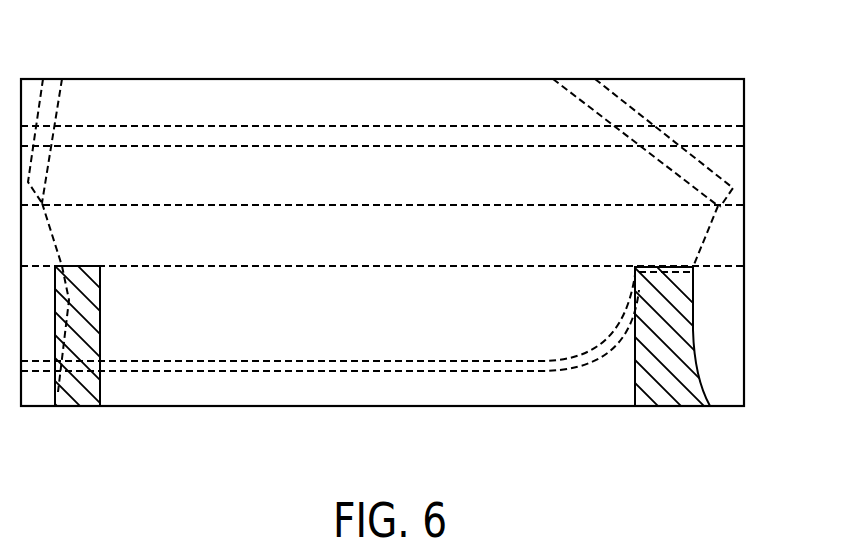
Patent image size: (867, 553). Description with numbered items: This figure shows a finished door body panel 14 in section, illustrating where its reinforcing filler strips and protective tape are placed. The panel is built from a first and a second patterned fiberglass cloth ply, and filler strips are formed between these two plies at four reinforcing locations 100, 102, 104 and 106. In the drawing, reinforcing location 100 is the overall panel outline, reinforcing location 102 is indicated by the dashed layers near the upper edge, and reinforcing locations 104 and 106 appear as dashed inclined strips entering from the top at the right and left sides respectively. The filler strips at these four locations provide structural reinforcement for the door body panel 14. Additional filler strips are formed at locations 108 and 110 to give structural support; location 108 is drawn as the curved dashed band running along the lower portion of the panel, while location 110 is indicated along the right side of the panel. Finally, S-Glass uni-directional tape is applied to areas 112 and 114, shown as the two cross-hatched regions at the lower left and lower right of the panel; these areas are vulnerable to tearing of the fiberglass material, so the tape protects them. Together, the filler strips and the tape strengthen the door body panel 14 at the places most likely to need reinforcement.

The reinforcing location 100 is at (360, 88).
The reinforcing location 102 is at (735, 137).
The reinforcing location 104 is at (573, 80).
The reinforcing location 106 is at (50, 87).
The filler strip location 108 is at (352, 366).
The filler strip location 110 is at (730, 232).
The tape area 112 is at (88, 397).
The tape area 114 is at (670, 393).
The door body panel 14 is at (342, 319).